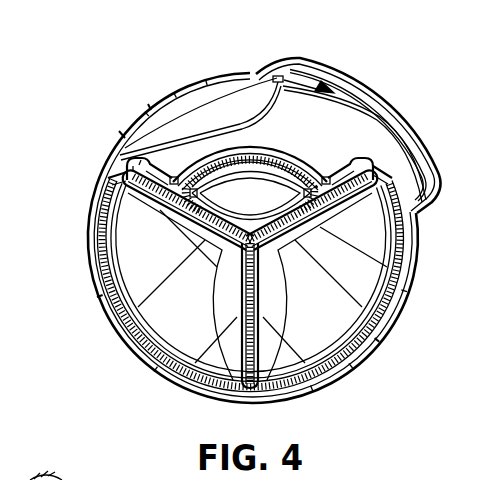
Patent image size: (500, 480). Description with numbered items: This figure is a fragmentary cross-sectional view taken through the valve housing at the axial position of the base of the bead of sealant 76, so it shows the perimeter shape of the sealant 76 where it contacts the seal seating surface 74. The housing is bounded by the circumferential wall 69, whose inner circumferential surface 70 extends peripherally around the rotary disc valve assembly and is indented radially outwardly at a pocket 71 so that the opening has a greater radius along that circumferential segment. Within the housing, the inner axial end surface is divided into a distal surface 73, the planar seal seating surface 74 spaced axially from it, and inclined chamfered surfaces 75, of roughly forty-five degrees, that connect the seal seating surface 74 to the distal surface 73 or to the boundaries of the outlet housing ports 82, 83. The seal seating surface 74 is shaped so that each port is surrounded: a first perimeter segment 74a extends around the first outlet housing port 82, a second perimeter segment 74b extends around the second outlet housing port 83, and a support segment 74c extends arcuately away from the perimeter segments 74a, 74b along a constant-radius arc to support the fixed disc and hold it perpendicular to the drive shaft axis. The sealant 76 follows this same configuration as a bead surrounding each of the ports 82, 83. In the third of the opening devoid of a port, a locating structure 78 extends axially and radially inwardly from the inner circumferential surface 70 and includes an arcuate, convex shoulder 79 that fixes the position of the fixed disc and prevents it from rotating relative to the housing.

The circumferential wall 69 is at (122, 135).
The inner circumferential surface 70 is at (151, 108).
The pocket 71 is at (280, 73).
The distal surface 73 is at (342, 143).
The seal seating surface 74 is at (406, 258).
The first perimeter segment 74a is at (383, 337).
The second perimeter segment 74b is at (97, 297).
The support segment 74c is at (248, 162).
The chamfered surface 75 is at (126, 170).
The sealant 76 is at (314, 164).
The locating structure 78 is at (212, 108).
The shoulder 79 is at (248, 122).
The first outlet housing port 82 is at (286, 252).
The second outlet housing port 83 is at (212, 250).